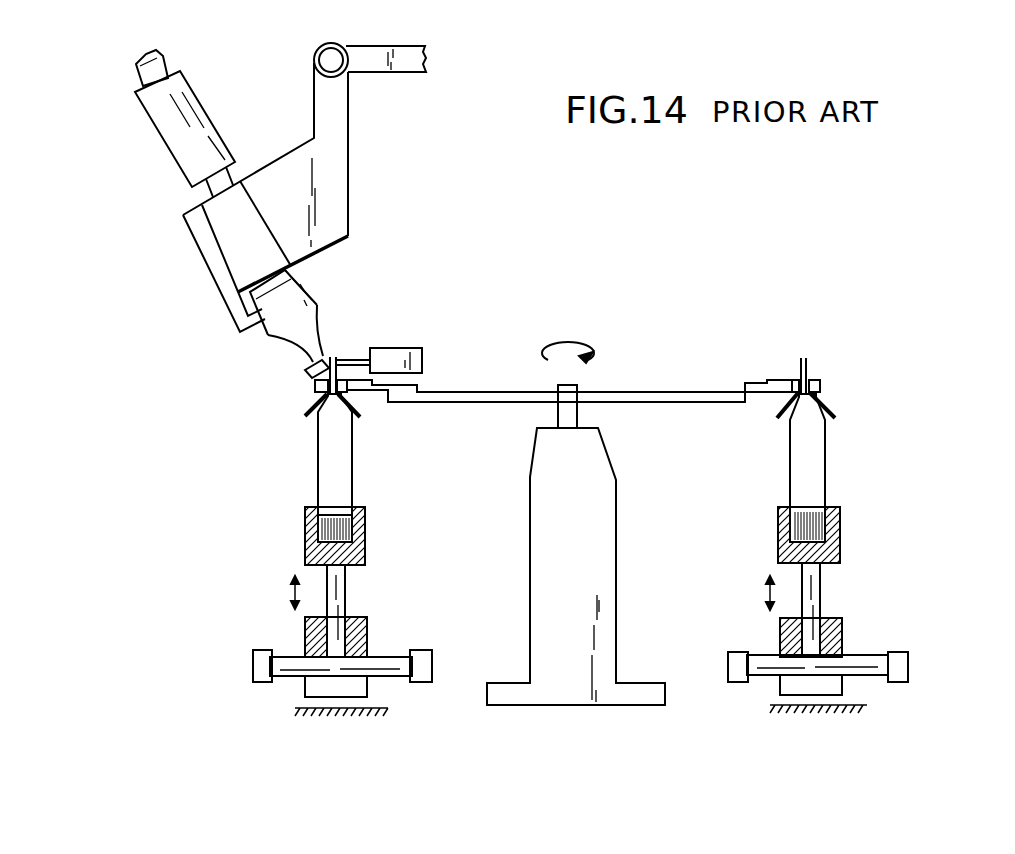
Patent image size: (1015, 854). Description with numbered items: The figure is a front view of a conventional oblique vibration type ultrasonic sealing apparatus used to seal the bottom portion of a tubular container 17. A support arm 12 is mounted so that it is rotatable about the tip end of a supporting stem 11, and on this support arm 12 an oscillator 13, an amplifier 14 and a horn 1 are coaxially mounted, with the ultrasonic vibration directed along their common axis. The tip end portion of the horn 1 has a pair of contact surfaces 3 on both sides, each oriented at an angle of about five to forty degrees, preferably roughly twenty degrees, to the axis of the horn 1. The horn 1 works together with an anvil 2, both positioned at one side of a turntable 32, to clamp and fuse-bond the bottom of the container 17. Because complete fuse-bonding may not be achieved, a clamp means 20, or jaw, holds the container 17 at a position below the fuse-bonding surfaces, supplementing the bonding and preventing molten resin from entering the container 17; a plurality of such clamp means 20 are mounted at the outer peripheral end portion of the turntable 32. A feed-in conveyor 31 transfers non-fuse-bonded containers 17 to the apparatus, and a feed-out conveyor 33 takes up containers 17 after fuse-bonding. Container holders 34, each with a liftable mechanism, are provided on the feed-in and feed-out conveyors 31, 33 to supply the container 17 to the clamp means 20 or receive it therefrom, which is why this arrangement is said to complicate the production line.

The horn 1 is at (305, 300).
The anvil 2 is at (393, 352).
The contact surfaces 3 is at (340, 358).
The supporting stem 11 is at (403, 74).
The support arm 12 is at (347, 172).
The oscillator 13 is at (172, 142).
The amplifier 14 is at (230, 235).
The container 17 is at (353, 468).
The clamp means 20 is at (316, 388).
The feed-in conveyor 31 is at (897, 648).
The turntable 32 is at (663, 392).
The feed-out conveyor 33 is at (255, 662).
The container holders 34 is at (366, 546).